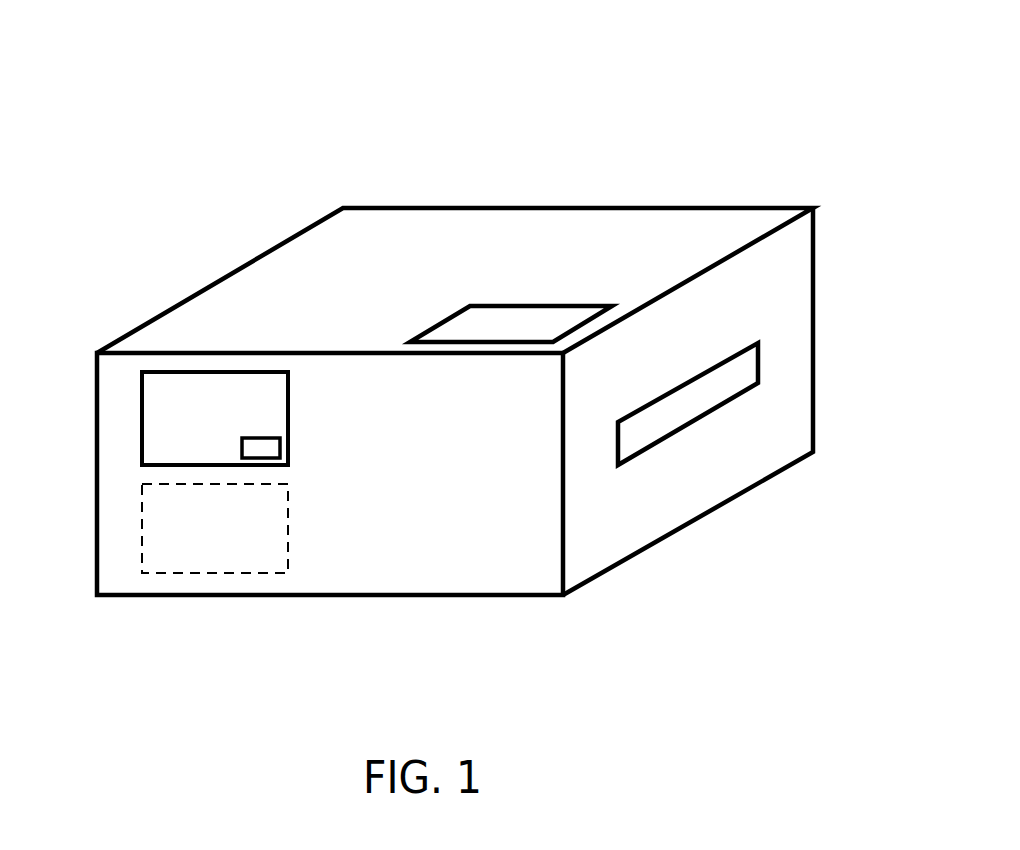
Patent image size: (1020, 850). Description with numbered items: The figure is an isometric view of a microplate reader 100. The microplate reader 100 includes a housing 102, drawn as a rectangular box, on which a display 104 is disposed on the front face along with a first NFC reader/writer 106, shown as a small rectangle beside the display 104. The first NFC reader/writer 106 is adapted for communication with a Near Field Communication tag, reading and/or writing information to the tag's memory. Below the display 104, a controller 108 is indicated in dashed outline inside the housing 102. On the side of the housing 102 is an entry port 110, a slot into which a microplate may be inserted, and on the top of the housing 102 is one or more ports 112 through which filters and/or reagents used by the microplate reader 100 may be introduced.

The microplate reader 100 is at (219, 62).
The housing 102 is at (245, 290).
The display 104 is at (160, 413).
The first NFC reader/writer 106 is at (245, 447).
The controller 108 is at (143, 542).
The entry port 110 is at (753, 375).
The ports 112 is at (500, 322).